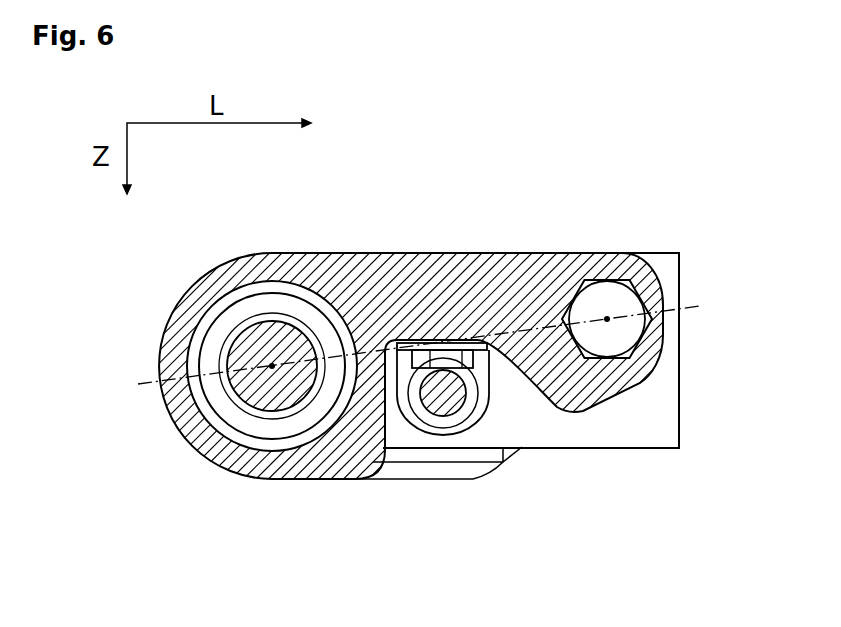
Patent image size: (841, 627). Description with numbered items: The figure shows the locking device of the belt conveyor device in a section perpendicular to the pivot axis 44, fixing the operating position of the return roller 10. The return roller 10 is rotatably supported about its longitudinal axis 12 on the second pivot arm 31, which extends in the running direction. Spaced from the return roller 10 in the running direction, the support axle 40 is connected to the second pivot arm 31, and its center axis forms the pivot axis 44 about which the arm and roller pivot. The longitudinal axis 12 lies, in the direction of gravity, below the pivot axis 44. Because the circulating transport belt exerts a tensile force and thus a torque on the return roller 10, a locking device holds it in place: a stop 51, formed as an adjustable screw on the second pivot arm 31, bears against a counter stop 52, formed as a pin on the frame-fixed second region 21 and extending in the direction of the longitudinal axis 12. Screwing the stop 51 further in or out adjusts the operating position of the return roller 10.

The return roller 10 is at (160, 345).
The longitudinal axis 12 is at (271, 366).
The second pivot arm 31 is at (348, 253).
The second region 21 is at (613, 430).
The support axle 40 is at (590, 280).
The pivot axis 44 is at (607, 319).
The stop 51 is at (447, 340).
The counter stop 52 is at (462, 413).